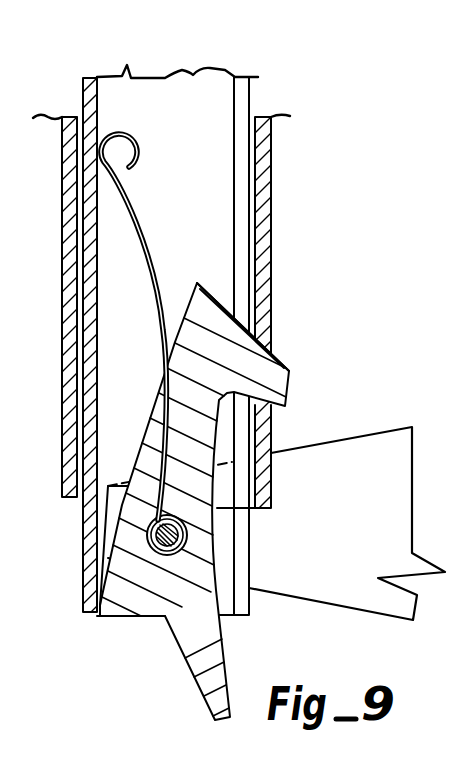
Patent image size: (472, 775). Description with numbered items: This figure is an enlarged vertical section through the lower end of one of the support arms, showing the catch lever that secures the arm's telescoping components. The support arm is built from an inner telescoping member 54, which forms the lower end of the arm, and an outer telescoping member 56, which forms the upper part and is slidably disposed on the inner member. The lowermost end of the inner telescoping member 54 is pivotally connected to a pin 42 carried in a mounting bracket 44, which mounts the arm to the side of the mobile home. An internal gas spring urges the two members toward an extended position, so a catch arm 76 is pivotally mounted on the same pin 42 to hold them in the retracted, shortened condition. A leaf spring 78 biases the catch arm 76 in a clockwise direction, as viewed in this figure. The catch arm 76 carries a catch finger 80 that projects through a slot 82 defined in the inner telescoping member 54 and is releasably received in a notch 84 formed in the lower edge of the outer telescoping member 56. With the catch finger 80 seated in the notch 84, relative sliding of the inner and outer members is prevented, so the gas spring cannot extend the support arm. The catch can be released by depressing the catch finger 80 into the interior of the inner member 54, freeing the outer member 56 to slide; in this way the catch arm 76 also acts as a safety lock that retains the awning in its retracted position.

The pin 42 is at (187, 533).
The mounting bracket 44 is at (363, 456).
The inner telescoping member 54 is at (80, 91).
The outer telescoping member 56 is at (272, 162).
The catch arm 76 is at (200, 387).
The leaf spring 78 is at (132, 212).
The catch finger 80 is at (279, 383).
The slot 82 is at (240, 230).
The notch 84 is at (263, 305).